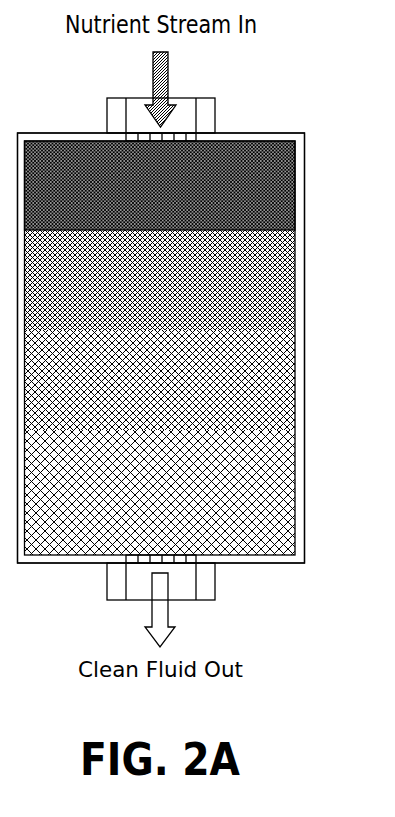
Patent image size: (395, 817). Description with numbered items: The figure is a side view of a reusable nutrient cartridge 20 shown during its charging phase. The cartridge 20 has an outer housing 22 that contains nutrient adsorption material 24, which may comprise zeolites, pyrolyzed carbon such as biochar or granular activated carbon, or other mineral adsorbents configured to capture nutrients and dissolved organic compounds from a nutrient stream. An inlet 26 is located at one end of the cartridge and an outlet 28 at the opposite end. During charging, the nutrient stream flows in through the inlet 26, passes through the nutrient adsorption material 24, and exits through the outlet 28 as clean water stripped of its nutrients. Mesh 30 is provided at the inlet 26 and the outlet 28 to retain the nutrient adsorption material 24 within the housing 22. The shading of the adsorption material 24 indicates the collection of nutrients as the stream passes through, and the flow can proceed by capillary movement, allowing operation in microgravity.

The reusable nutrient cartridge 20 is at (333, 141).
The outer housing 22 is at (304, 248).
The nutrient adsorption material 24 is at (277, 347).
The inlet 26 is at (83, 108).
The outlet 28 is at (81, 586).
The mesh 30 is at (191, 135).